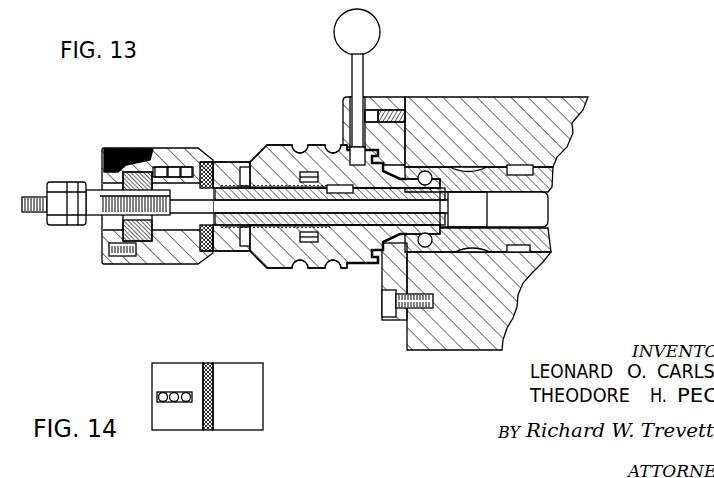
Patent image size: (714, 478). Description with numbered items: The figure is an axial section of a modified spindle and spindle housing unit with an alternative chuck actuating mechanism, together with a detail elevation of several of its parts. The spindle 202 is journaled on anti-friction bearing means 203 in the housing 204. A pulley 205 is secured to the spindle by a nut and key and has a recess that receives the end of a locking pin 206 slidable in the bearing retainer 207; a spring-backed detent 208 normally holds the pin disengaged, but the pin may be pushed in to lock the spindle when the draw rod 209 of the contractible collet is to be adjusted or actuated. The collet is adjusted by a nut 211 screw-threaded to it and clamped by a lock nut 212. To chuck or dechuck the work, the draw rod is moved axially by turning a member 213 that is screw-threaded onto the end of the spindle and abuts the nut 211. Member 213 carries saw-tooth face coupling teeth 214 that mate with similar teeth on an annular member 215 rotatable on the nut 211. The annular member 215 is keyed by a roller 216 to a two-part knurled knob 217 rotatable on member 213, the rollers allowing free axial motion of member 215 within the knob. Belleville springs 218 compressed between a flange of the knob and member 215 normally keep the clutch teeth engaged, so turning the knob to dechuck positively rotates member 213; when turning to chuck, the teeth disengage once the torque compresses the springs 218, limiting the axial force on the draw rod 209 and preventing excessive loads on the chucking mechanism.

In FIG. 13, the spindle 202 is at (440, 182).
In FIG. 13, the anti-friction bearing means 203 is at (424, 248).
In FIG. 13, the housing 204 is at (557, 112).
In FIG. 13, the pulley 205 is at (315, 155).
In FIG. 13, the locking pin 206 is at (358, 70).
In FIG. 13, the bearing retainer 207 is at (410, 104).
In FIG. 13, the spring-backed detent 208 is at (367, 115).
In FIG. 13, the draw rod 209 is at (346, 210).
In FIG. 13, the nut 211 is at (90, 188).
In FIG. 13, the lock nut 212 is at (57, 220).
In FIG. 13, the member 213 is at (237, 236).
In FIG. 14, the member 213 is at (258, 383).
In FIG. 13, the saw-tooth face coupling teeth 214 is at (213, 163).
In FIG. 14, the saw-tooth face coupling teeth 214 is at (213, 377).
In FIG. 13, the annular member 215 is at (180, 240).
In FIG. 14, the annular member 215 is at (157, 381).
In FIG. 13, the roller 216 is at (182, 167).
In FIG. 14, the roller 216 is at (187, 392).
In FIG. 13, the two-part knurled knob 217 is at (160, 155).
In FIG. 13, the Belleville springs 218 is at (140, 241).